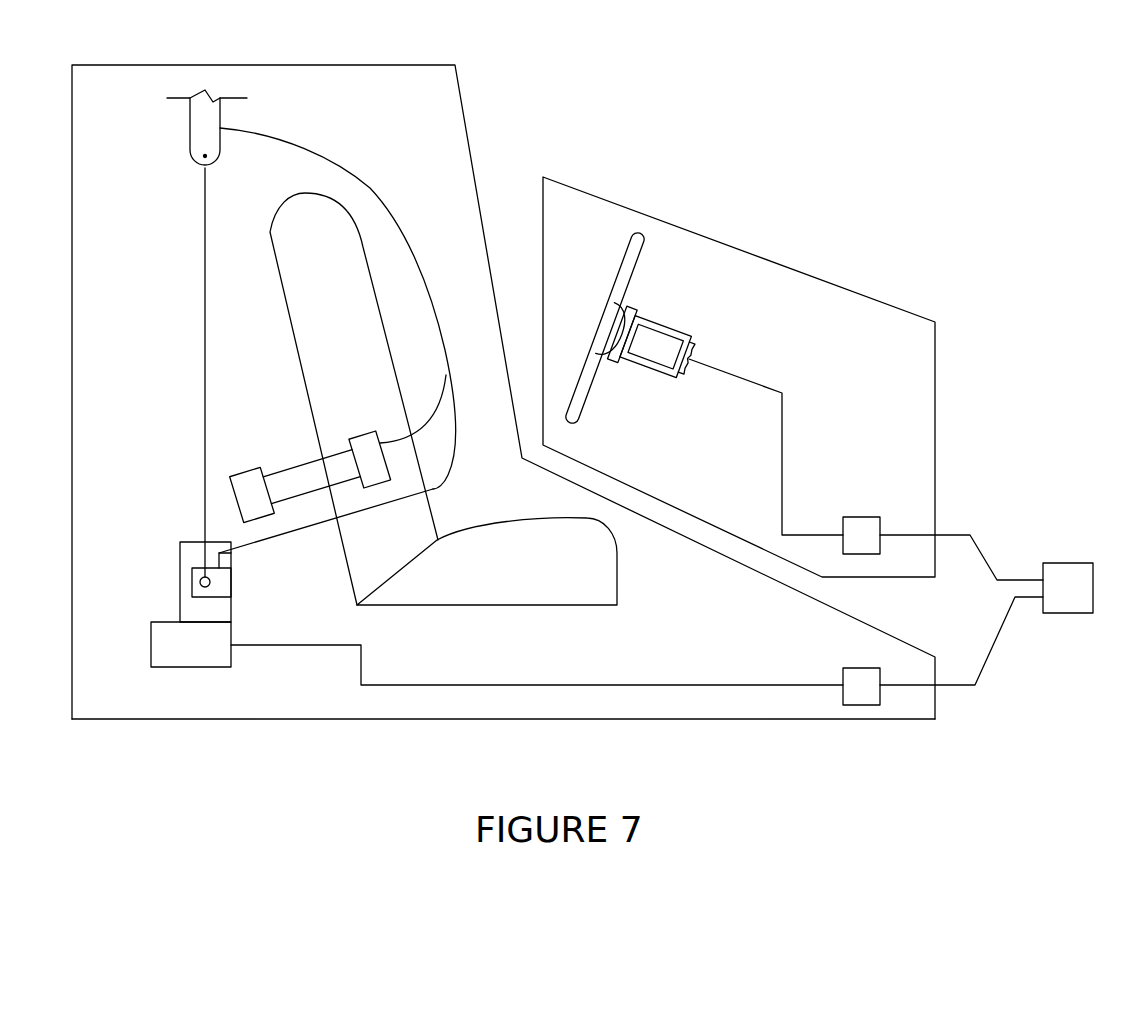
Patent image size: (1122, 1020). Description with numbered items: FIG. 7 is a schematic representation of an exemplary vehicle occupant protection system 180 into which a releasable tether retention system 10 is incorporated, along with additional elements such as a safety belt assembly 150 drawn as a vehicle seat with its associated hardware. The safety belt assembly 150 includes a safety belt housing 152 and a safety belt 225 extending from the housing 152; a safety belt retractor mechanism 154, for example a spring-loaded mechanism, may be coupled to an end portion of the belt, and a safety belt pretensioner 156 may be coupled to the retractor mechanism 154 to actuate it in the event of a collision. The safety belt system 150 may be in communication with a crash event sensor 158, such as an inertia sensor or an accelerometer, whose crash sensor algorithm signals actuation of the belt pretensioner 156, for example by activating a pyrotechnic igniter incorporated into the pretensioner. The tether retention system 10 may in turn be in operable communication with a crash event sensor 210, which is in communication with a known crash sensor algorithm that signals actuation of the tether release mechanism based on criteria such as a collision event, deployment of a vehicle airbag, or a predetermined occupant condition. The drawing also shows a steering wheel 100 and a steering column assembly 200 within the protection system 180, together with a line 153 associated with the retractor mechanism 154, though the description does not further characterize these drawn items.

The releasable tether retention system 10 is at (990, 537).
The steering wheel 100 is at (644, 302).
The safety belt assembly 150 is at (503, 748).
The safety belt housing 152 is at (156, 593).
The cable 153 is at (223, 372).
The safety belt retractor mechanism 154 is at (257, 526).
The safety belt pretensioner 156 is at (170, 668).
The crash event sensor 158 is at (637, 651).
The vehicle occupant protection system 180 is at (563, 113).
The steering column assembly 200 is at (739, 377).
The crash event sensor 210 is at (799, 456).
The safety belt 225 is at (392, 347).